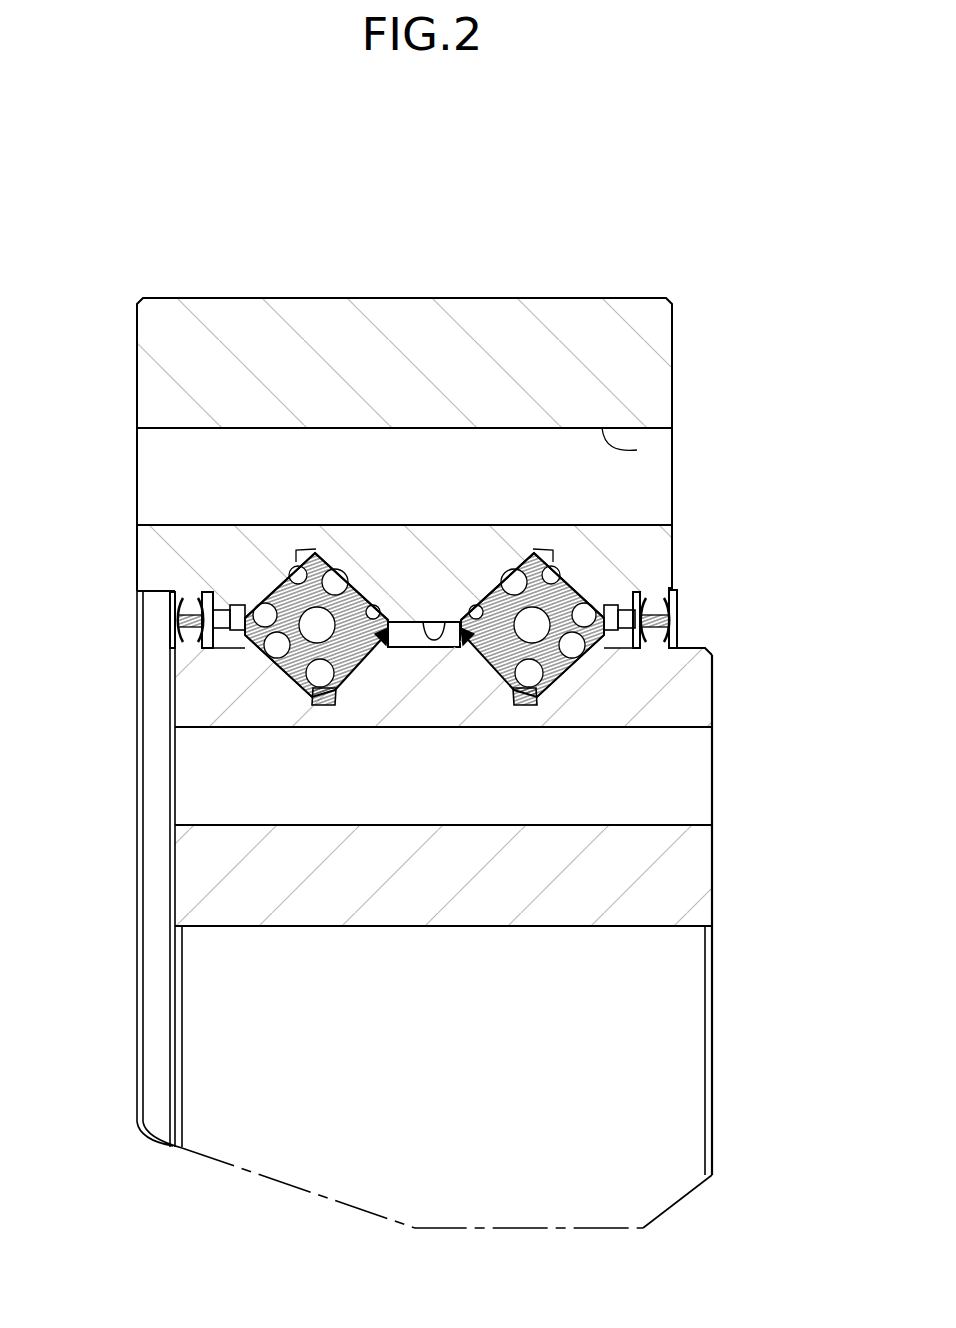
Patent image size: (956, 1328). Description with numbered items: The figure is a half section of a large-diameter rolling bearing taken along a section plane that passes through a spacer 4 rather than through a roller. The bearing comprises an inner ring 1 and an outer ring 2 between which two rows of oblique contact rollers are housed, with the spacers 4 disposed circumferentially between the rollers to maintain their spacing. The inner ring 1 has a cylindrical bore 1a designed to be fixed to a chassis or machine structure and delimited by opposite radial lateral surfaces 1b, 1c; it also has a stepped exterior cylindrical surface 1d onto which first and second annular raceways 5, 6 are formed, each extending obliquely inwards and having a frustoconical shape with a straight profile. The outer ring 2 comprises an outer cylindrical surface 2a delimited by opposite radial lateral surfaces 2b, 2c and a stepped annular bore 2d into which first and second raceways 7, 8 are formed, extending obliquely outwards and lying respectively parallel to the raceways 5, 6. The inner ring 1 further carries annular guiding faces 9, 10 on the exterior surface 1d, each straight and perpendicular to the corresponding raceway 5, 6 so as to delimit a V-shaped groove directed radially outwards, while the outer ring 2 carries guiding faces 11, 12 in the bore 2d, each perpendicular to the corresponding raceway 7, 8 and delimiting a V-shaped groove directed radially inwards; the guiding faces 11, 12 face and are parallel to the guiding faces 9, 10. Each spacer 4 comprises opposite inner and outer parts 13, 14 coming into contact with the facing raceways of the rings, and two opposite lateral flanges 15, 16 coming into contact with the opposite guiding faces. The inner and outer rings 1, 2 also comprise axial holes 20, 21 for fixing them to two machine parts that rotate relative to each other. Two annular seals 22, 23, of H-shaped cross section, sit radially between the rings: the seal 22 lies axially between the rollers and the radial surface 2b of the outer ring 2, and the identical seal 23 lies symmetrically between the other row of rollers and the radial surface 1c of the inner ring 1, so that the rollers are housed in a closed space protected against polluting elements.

The inner ring 1 is at (712, 878).
The bore 1a is at (668, 935).
The radial lateral surface 1b is at (175, 880).
The radial lateral surface 1c is at (712, 845).
The stepped exterior cylindrical surface 1d is at (690, 642).
The outer ring 2 is at (240, 297).
The outer cylindrical surface 2a is at (405, 298).
The radial lateral surface 2b is at (136, 363).
The radial lateral surface 2c is at (672, 357).
The stepped annular bore 2d is at (445, 621).
The spacer 4 is at (423, 486).
The first annular raceway 5 is at (280, 628).
The second annular raceway 6 is at (600, 632).
The first raceway 7 is at (298, 580).
The second raceway 8 is at (552, 583).
The guiding face 9 is at (298, 672).
The guiding face 10 is at (551, 672).
The guiding face 11 is at (232, 605).
The guiding face 12 is at (632, 598).
The inner part 13 is at (262, 646).
The outer part 14 is at (366, 556).
The lateral flange 15 is at (357, 663).
The lateral flange 16 is at (246, 604).
The axial hole 20 is at (665, 822).
The axial hole 21 is at (637, 450).
The annular seal 22 is at (165, 613).
The annular seal 23 is at (683, 613).